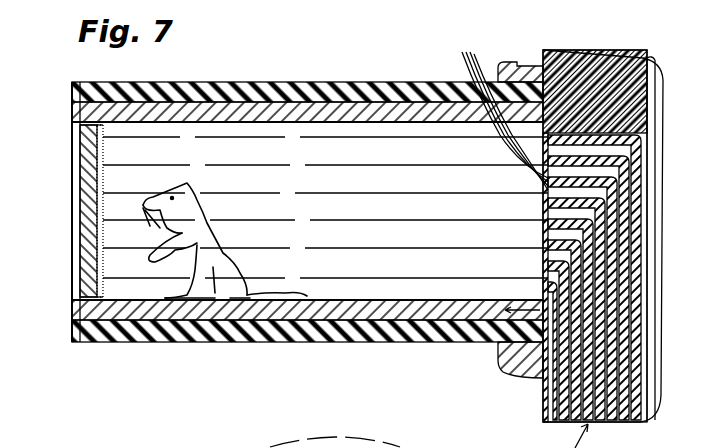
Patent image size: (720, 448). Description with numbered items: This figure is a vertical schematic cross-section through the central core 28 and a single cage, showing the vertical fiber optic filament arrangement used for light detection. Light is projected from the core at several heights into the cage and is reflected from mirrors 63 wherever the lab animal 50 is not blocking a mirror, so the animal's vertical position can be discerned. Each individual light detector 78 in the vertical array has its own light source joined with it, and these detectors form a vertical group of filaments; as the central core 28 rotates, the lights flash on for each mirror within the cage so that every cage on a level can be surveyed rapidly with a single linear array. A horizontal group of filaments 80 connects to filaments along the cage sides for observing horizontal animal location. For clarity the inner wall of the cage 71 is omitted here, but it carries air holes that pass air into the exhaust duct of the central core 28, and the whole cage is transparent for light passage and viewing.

The central core 28 is at (613, 58).
The lab animal 50 is at (213, 270).
The mirrors 63 is at (104, 211).
The inner wall of the cage 71 is at (336, 300).
The light detector 78 is at (501, 112).
The horizontal group of filaments 80 is at (497, 350).